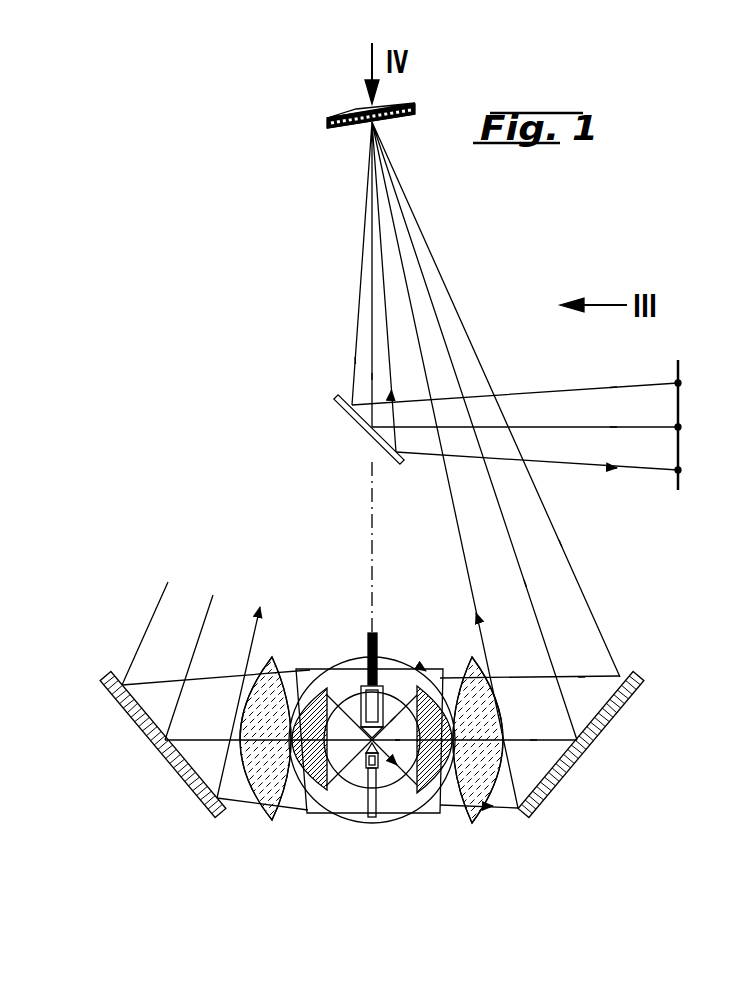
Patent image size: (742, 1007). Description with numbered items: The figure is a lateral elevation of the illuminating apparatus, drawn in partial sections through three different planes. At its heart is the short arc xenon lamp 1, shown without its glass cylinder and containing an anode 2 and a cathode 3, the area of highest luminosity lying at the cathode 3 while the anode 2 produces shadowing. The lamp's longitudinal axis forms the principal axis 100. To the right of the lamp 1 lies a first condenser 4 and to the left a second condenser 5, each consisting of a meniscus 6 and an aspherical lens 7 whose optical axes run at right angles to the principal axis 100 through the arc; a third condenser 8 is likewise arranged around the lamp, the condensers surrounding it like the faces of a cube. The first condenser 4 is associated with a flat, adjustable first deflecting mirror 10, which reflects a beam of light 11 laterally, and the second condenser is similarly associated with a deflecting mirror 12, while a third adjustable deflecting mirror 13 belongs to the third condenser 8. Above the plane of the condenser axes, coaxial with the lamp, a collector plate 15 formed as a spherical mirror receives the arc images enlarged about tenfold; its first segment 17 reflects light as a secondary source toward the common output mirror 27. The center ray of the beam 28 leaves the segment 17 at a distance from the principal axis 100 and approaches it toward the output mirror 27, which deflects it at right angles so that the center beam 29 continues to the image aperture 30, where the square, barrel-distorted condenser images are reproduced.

The short arc xenon lamp 1 is at (358, 777).
The anode 2 is at (390, 697).
The cathode 3 is at (383, 807).
The first condenser 4 is at (486, 828).
The second condenser 5 is at (257, 818).
The meniscus 6 is at (293, 797).
The aspherical lens 7 is at (270, 667).
The third condenser 8 is at (358, 833).
The first deflecting mirror 10 is at (613, 708).
The beam of light 11 is at (552, 574).
The deflecting mirror 12 is at (162, 755).
The third adjustable deflecting mirror 13 is at (303, 675).
The collector plate 15 is at (406, 99).
The first segment 17 is at (353, 126).
The output mirror 27 is at (352, 417).
The beam 28 is at (366, 325).
The center beam 29 is at (537, 425).
The image aperture 30 is at (682, 447).
The principal axis 100 is at (376, 556).